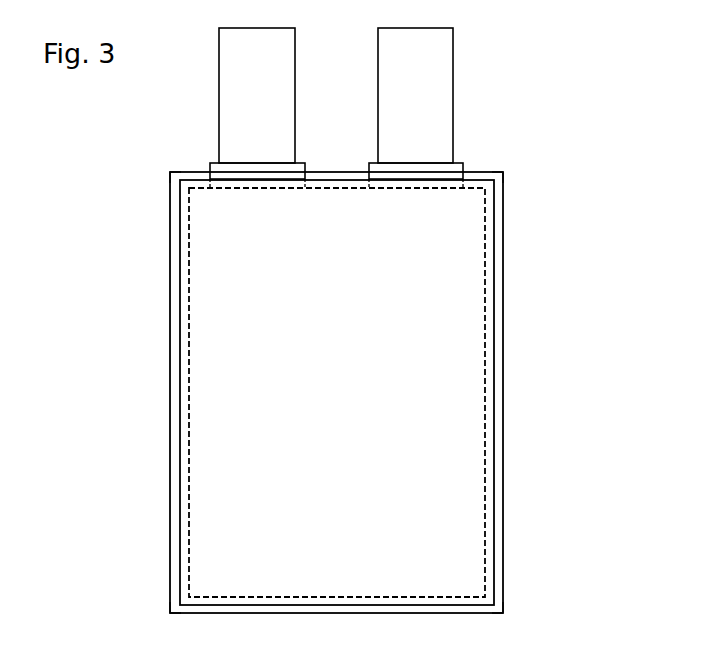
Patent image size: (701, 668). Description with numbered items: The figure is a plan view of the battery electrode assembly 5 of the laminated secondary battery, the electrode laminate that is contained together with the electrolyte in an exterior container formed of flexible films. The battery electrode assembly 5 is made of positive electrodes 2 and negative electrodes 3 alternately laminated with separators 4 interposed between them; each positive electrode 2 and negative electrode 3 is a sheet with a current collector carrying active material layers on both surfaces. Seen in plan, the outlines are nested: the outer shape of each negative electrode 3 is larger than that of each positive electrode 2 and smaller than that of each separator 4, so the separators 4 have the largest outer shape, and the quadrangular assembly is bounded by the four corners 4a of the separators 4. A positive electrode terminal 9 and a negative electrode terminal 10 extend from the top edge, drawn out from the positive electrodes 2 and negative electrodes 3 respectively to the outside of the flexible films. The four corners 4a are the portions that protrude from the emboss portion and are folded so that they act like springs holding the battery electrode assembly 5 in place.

The positive electrode 2 is at (478, 406).
The negative electrode 3 is at (494, 358).
The separator 4 is at (503, 322).
The corner of separator 4a is at (172, 172).
The battery electrode assembly 5 is at (520, 452).
The positive electrode terminal 9 is at (230, 57).
The negative electrode terminal 10 is at (440, 68).